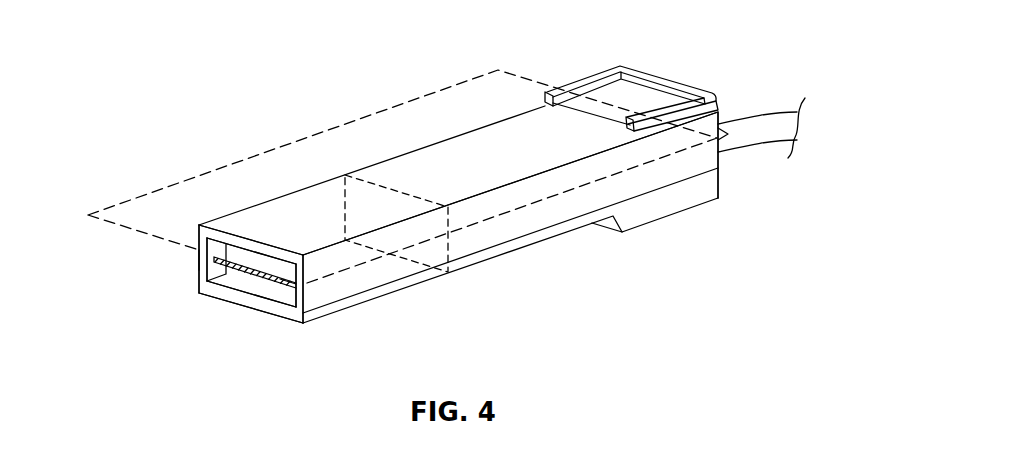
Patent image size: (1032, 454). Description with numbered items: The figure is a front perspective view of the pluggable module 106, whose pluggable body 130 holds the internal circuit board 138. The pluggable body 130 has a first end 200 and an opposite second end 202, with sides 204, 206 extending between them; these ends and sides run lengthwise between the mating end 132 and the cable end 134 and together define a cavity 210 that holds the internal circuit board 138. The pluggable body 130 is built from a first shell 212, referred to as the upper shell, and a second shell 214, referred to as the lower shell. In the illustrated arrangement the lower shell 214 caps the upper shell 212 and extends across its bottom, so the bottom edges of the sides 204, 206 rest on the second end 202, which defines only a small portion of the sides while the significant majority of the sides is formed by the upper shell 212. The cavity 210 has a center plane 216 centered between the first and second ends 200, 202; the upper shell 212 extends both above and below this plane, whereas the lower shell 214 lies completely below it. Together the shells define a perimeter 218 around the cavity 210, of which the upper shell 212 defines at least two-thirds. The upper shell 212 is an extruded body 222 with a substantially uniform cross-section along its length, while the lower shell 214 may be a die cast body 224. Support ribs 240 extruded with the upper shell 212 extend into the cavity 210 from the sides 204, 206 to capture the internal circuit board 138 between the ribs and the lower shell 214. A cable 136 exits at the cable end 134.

The pluggable module 106 is at (287, 58).
The pluggable body 130 is at (190, 260).
The mating end 132 is at (190, 283).
The cable end 134 is at (724, 100).
The cable 136 is at (757, 137).
The internal circuit board 138 is at (253, 270).
The first end 200 is at (247, 236).
The second end 202 is at (240, 270).
The side 204 is at (198, 268).
The side 206 is at (294, 290).
The cavity 210 is at (286, 295).
The first shell 212 is at (500, 204).
The second shell 214 is at (500, 247).
The center plane 216 is at (318, 130).
The perimeter 218 is at (400, 191).
The extruded body 222 is at (281, 252).
The die cast body 224 is at (332, 312).
The support ribs 240 is at (228, 244).